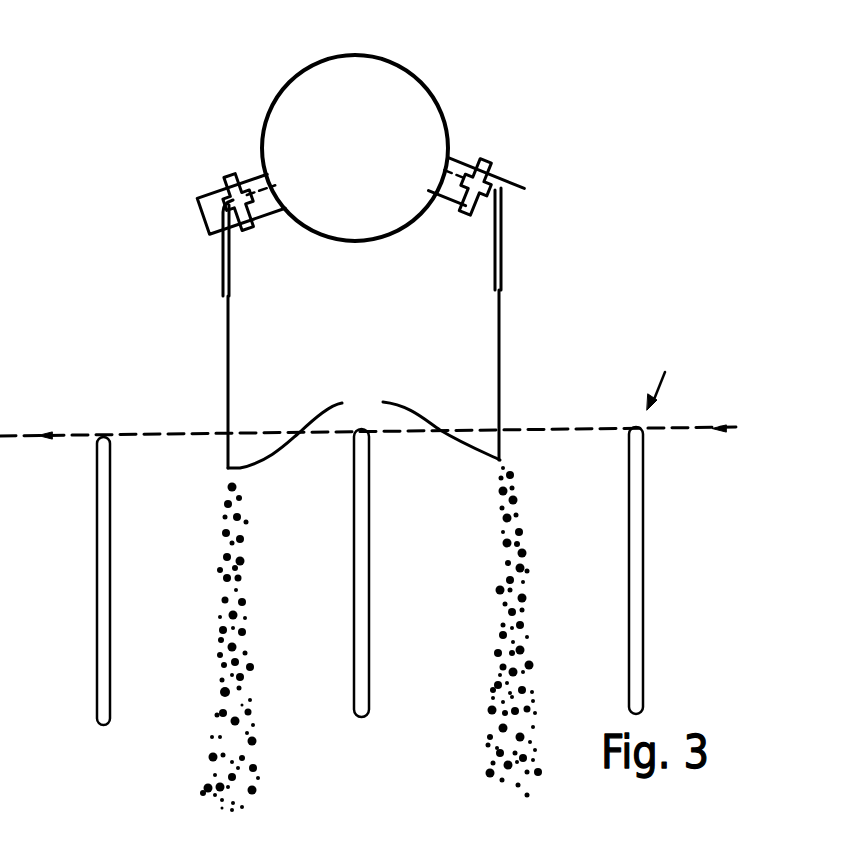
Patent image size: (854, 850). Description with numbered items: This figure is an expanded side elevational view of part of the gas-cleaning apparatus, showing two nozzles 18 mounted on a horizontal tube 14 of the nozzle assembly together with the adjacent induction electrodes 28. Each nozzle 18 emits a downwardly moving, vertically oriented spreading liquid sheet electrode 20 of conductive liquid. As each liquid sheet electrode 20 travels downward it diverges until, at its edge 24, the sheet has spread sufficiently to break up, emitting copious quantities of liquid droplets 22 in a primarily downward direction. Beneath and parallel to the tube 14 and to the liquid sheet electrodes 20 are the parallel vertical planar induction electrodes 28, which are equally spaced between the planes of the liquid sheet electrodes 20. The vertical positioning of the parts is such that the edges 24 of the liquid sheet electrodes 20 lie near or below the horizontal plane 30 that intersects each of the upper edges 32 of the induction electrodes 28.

The parallel horizontal tube 14 is at (426, 84).
The nozzle 18 is at (230, 192).
The liquid sheet electrode 20 is at (228, 295).
The liquid droplets 22 is at (232, 740).
The edge of liquid sheet electrode 24 is at (364, 429).
The induction electrode 28 is at (360, 655).
The horizontal plane 30 is at (388, 428).
The upper edge of induction electrode 32 is at (669, 373).